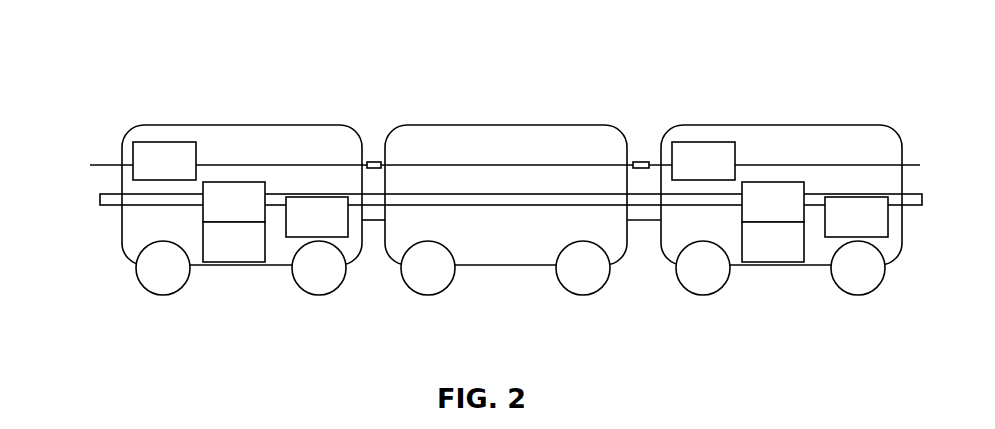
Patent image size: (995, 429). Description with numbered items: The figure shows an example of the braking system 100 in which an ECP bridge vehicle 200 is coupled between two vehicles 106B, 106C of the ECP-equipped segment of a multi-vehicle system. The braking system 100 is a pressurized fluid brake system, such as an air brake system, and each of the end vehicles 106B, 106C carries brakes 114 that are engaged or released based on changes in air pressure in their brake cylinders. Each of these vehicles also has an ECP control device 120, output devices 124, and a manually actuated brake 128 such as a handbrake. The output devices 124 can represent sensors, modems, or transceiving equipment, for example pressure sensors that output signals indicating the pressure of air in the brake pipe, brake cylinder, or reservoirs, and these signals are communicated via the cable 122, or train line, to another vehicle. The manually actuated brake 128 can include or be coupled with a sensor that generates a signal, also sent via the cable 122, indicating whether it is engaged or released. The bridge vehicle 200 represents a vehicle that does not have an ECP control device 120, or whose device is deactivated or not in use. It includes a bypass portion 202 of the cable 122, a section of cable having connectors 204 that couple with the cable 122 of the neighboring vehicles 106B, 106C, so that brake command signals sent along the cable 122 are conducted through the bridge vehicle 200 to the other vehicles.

The braking system 100 is at (903, 63).
The vehicle 106B is at (165, 126).
The vehicle 106C is at (838, 126).
The ECP bridge vehicle 200 is at (505, 125).
The bypass portion 202 is at (643, 300).
The connectors 204 is at (374, 161).
The cable 122 is at (102, 163).
The output devices 124 is at (187, 172).
The ECP control device 120 is at (212, 212).
The brakes 114 is at (212, 250).
The manually actuated brake 128 is at (295, 228).